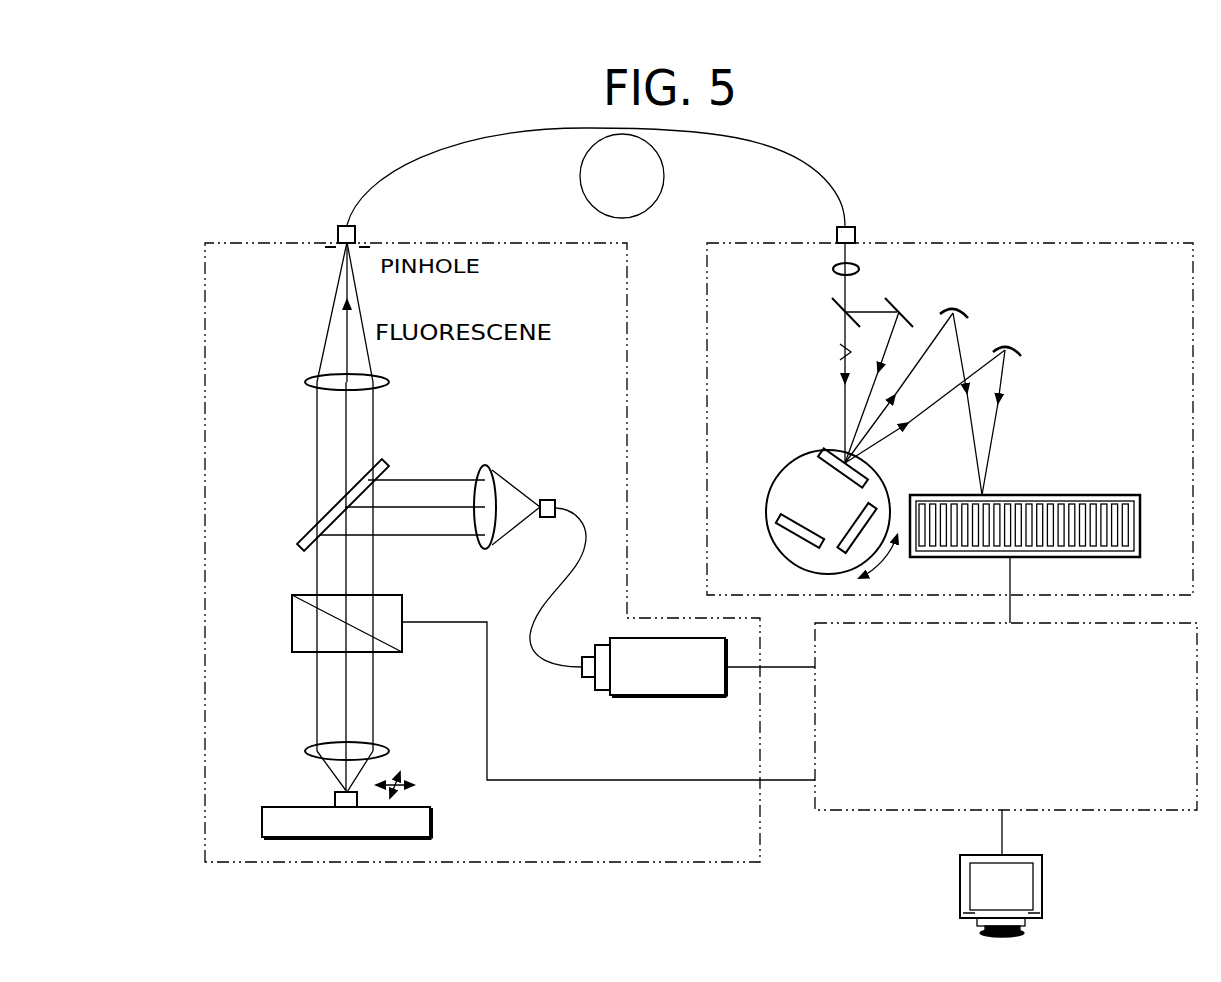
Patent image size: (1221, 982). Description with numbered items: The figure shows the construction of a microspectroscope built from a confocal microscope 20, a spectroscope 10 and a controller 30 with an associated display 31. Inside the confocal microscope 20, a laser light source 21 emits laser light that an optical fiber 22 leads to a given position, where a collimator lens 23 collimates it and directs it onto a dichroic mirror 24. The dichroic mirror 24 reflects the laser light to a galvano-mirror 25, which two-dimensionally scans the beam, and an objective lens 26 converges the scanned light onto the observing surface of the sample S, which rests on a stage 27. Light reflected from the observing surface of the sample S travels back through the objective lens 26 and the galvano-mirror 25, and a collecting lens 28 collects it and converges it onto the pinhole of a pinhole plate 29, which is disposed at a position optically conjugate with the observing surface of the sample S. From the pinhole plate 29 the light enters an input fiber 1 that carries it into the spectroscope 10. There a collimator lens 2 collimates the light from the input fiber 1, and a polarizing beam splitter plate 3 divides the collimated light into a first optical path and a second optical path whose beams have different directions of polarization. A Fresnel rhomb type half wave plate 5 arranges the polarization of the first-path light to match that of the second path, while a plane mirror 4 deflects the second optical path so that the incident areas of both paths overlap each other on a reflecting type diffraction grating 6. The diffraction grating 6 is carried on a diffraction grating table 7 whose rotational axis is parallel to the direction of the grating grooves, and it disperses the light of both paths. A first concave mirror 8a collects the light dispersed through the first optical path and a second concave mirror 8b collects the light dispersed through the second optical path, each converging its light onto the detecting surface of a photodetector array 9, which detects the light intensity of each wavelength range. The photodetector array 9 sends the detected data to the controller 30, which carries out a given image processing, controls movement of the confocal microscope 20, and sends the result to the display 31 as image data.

The input fiber 1 is at (856, 235).
The collimator lens 2 is at (835, 272).
The polarizing beam splitter plate 3 is at (838, 317).
The plane mirror 4 is at (905, 302).
The Fresnel rhomb type half wave plate 5 is at (838, 350).
The reflecting type diffraction grating 6 is at (822, 457).
The diffraction grating table 7 is at (770, 475).
The first concave mirror 8a is at (1020, 350).
The second concave mirror 8b is at (968, 312).
The photodetector array 9 is at (1090, 495).
The spectroscope 10 is at (1000, 243).
The confocal microscope 20 is at (283, 241).
The laser light source 21 is at (652, 697).
The optical fiber 22 is at (557, 506).
The collimator lens 23 is at (487, 465).
The dichroic mirror 24 is at (308, 528).
The galvano-mirror 25 is at (292, 612).
The objective lens 26 is at (312, 745).
The stage 27 is at (270, 807).
The collecting lens 28 is at (312, 378).
The pinhole plate 29 is at (335, 248).
The controller 30 is at (830, 812).
The display 31 is at (960, 875).
The sample S is at (333, 797).